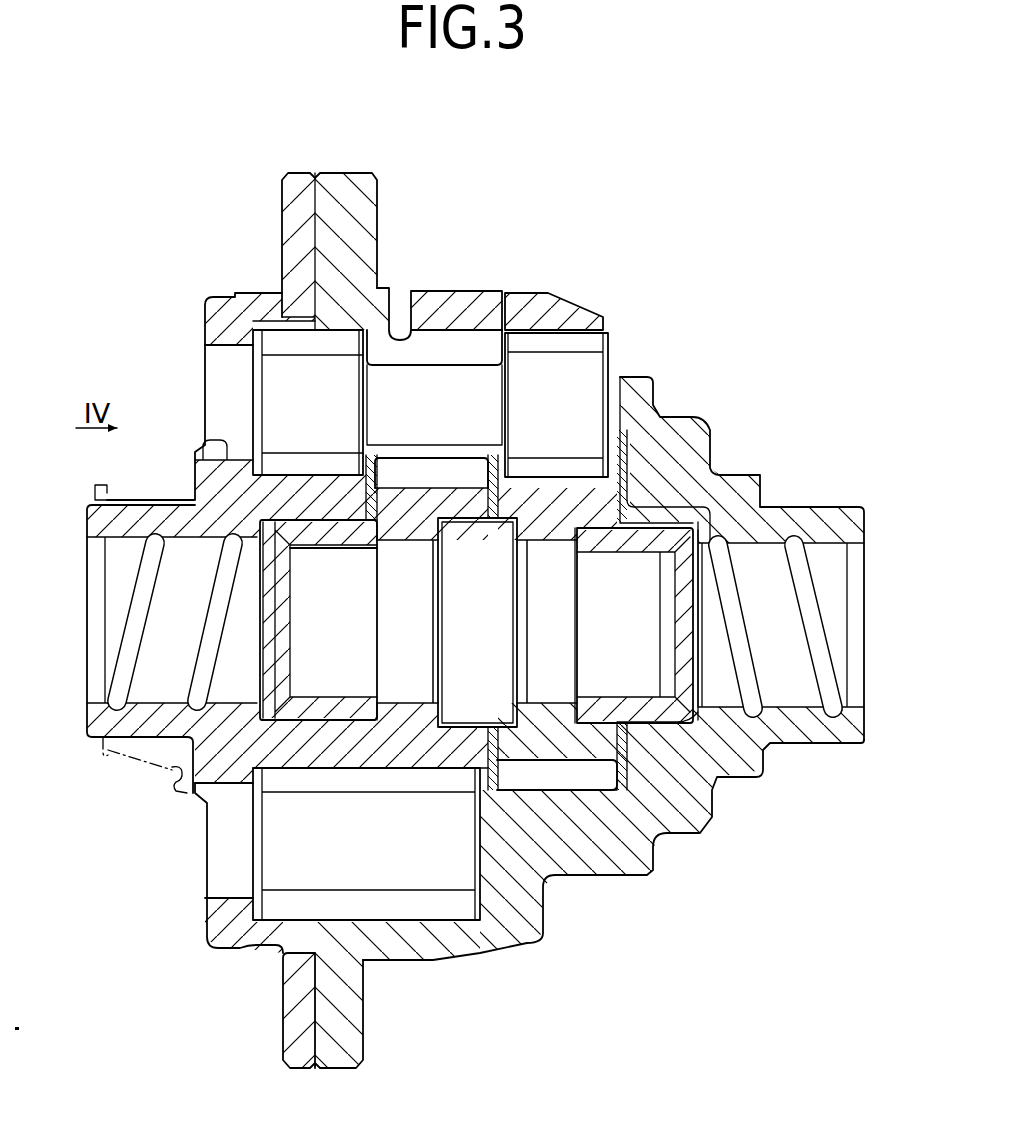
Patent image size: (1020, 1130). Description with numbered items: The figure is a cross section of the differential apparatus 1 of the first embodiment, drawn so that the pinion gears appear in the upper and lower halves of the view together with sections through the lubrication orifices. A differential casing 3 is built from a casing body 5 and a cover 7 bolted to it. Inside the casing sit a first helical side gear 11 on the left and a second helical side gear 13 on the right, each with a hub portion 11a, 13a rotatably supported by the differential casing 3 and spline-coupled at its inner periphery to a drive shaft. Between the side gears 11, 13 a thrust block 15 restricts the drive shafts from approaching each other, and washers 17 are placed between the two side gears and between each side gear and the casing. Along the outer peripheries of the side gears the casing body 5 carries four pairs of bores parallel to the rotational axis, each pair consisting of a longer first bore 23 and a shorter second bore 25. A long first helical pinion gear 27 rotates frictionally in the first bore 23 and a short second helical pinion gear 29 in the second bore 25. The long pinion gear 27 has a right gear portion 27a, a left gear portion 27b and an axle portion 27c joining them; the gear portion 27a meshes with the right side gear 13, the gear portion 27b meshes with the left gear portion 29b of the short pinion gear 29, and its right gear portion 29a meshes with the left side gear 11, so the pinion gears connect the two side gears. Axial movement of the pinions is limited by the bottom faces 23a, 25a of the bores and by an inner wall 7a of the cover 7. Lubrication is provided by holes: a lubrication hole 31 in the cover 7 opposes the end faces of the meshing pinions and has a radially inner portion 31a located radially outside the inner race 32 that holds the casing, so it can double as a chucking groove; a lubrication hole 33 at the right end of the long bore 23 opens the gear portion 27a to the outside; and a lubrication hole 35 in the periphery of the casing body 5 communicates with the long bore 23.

The differential apparatus 1 is at (606, 227).
The differential casing 3 is at (315, 172).
The casing body 5 is at (378, 200).
The cover 7 is at (283, 248).
The inner wall of the cover 7a is at (265, 410).
The first helical side gear 11 is at (410, 479).
The hub portion of first side gear 11a is at (316, 540).
The second helical side gear 13 is at (560, 479).
The hub portion of second side gear 13a is at (637, 534).
The thrust block 15 is at (462, 637).
The washer 17 is at (366, 550).
The first bore 23 is at (400, 333).
The bottom face of first bore 23a is at (650, 407).
The second bore 25 is at (452, 918).
The bottom face of second bore 25a is at (545, 880).
The first helical pinion gear 27 is at (454, 383).
The gear portion of first pinion gear 27a is at (563, 352).
The gear portion of first pinion gear 27b is at (312, 458).
The axle portion 27c is at (412, 423).
The second helical pinion gear 29 is at (435, 885).
The right gear portion of second pinion gear 29a is at (428, 907).
The left gear portion of second pinion gear 29b is at (303, 779).
The lubrication hole 31 is at (221, 357).
The radially inner portion of lubrication hole 31a is at (201, 448).
The inner race 32 is at (93, 765).
The lubrication hole 33 is at (667, 331).
The lubrication hole 35 is at (501, 305).